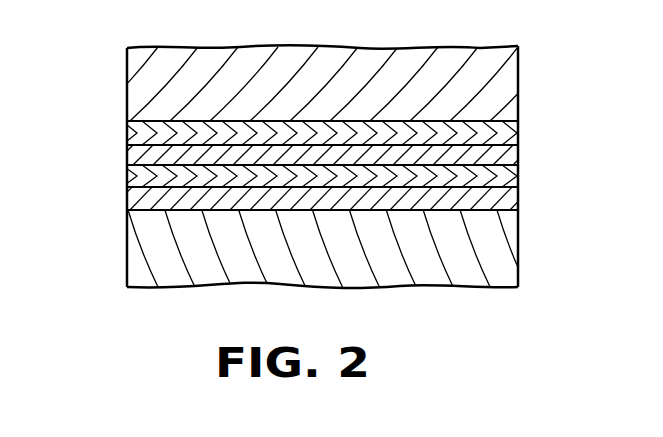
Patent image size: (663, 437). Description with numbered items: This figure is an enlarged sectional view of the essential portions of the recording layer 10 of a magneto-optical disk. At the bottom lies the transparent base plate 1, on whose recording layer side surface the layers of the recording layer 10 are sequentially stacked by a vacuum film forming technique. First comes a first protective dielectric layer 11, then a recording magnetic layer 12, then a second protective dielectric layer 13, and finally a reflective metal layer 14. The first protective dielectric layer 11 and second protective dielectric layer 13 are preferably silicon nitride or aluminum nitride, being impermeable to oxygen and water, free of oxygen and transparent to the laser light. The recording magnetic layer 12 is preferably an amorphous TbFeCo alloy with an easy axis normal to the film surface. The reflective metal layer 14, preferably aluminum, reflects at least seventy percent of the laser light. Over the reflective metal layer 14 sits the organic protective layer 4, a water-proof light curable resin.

The transparent base plate 1 is at (138, 258).
The organic protective layer 4 is at (132, 73).
The recording layer 10 is at (270, 172).
The first protective dielectric layer 11 is at (298, 207).
The recording magnetic layer 12 is at (134, 177).
The second protective dielectric layer 13 is at (133, 158).
The reflective metal layer 14 is at (136, 131).